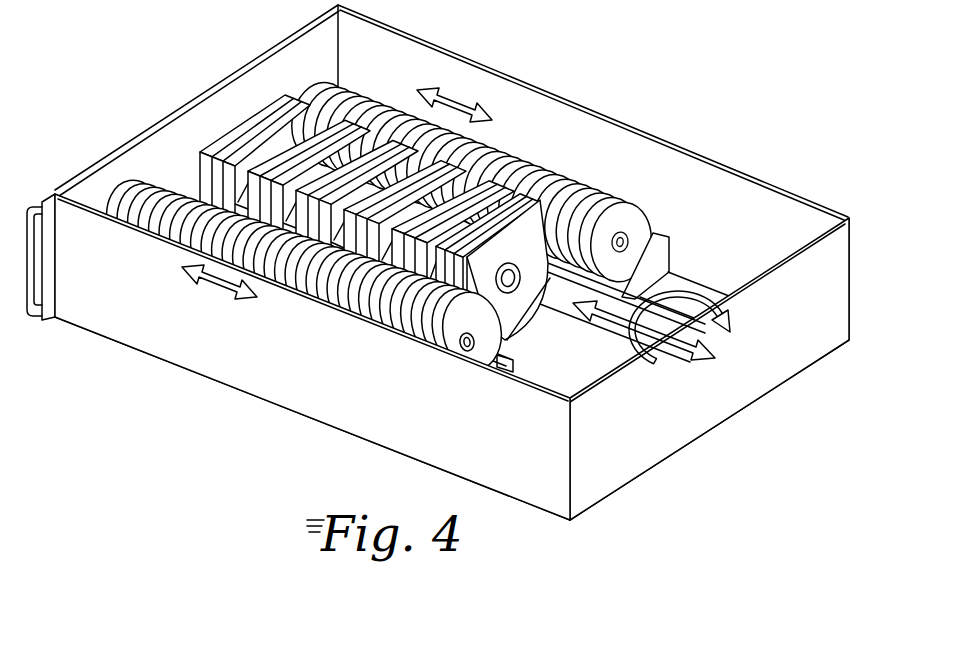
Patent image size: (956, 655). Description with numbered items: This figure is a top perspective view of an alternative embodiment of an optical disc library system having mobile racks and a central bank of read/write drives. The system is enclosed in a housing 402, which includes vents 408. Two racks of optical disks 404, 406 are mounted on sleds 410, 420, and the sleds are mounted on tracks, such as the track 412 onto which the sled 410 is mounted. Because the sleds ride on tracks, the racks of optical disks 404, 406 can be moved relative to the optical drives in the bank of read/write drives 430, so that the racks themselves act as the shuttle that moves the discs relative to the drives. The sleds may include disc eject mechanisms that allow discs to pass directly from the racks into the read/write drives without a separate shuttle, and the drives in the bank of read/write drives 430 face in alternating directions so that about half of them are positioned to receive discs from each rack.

The housing 402 is at (438, 262).
The rack of optical disks 404 is at (552, 168).
The rack of optical disks 406 is at (323, 284).
The vents 408 is at (247, 78).
The sled 410 is at (665, 252).
The track 412 is at (712, 304).
The sled 420 is at (513, 358).
The bank of read/write drives 430 is at (220, 153).